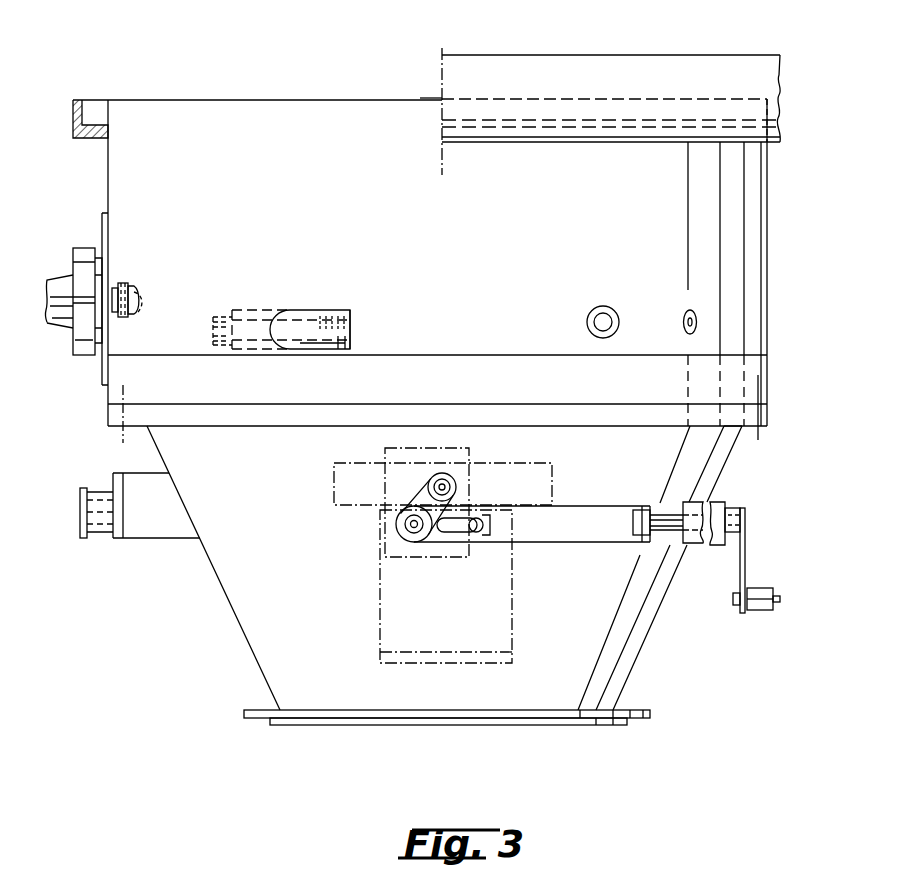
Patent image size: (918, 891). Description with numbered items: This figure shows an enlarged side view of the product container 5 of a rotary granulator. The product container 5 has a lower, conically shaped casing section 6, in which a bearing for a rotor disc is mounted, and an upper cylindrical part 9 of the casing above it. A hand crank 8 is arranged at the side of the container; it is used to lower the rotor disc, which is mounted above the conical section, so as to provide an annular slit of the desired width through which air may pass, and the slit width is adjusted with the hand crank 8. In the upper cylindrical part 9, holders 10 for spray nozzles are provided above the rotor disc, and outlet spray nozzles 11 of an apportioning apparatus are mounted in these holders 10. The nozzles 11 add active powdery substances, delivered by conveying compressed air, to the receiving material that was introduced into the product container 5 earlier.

The product container 5 is at (256, 100).
The conically shaped casing section 6 is at (257, 628).
The hand crank 8 is at (762, 600).
The upper cylindrical part 9 is at (128, 178).
The holder 10 is at (122, 318).
The outlet spray nozzle 11 is at (141, 298).